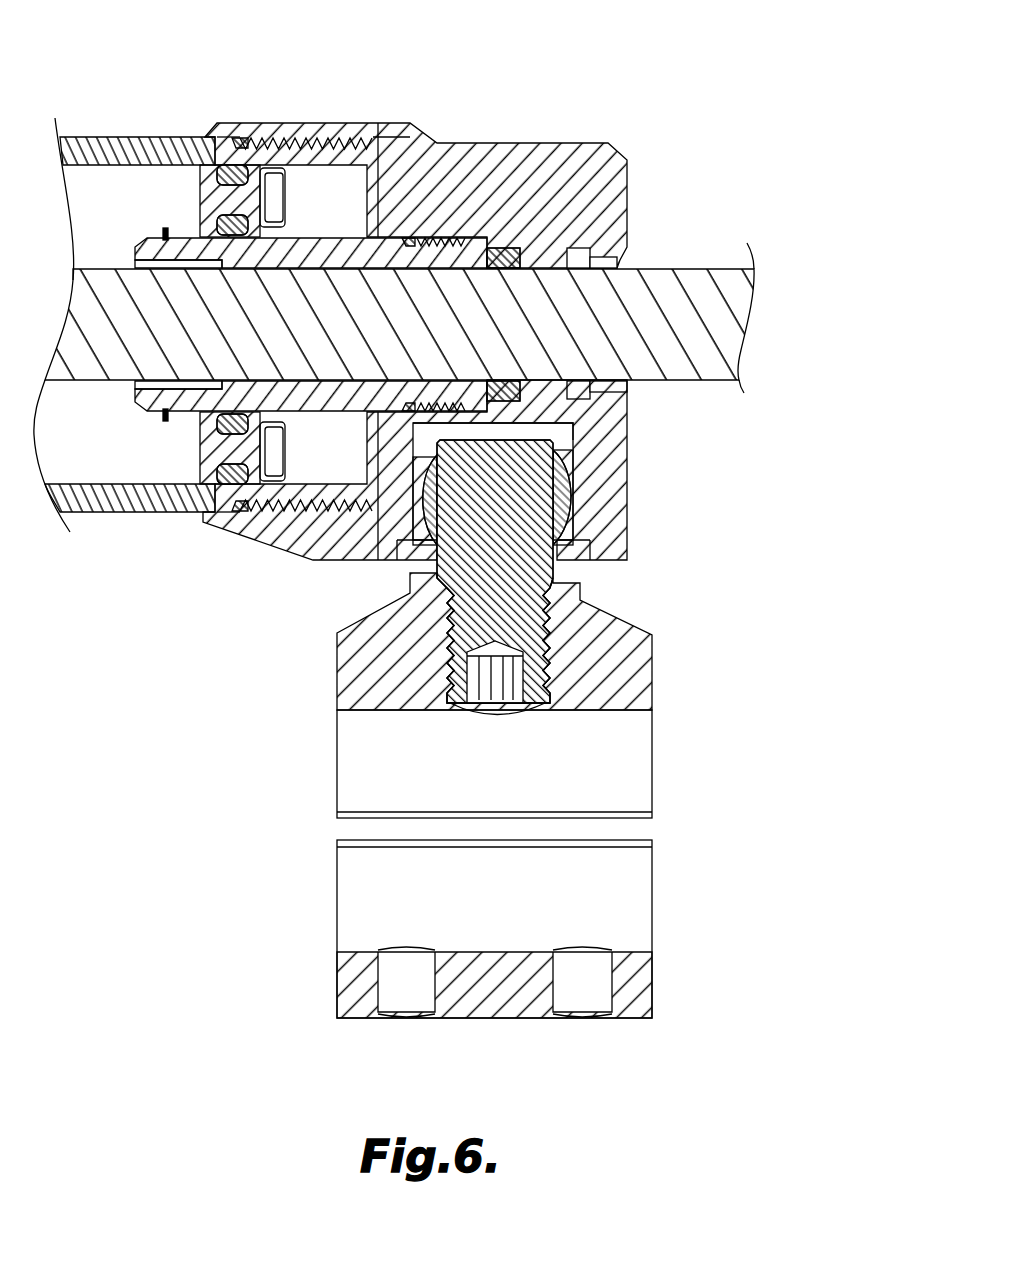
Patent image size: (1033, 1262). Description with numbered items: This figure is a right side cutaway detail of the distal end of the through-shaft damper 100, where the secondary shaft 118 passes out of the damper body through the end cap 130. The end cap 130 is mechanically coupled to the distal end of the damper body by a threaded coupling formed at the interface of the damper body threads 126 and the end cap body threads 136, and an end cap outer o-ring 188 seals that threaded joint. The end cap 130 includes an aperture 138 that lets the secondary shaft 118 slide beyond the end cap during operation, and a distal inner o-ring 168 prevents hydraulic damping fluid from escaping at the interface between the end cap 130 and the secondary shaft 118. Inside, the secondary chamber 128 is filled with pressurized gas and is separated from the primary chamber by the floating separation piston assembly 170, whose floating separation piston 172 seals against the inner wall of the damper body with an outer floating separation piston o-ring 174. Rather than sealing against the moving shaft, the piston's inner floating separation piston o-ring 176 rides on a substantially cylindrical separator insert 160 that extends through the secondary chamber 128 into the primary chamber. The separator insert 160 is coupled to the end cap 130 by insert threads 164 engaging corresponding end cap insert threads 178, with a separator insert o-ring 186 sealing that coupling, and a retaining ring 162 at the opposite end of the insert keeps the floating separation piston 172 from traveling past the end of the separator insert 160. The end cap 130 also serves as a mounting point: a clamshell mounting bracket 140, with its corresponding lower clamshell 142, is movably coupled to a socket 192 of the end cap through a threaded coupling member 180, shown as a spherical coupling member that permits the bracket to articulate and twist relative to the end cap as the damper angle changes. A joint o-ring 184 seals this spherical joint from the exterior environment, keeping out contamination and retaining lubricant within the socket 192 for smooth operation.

The through-shaft damper 100 is at (640, 74).
The secondary shaft 118 is at (695, 268).
The damper body threads 126 is at (337, 187).
The secondary chamber 128 is at (378, 150).
The end cap 130 is at (540, 143).
The end cap body threads 136 is at (282, 137).
The aperture 138 is at (625, 258).
The clamshell mounting bracket 140 is at (650, 664).
The lower clamshell 142 is at (655, 970).
The separator insert 160 is at (146, 237).
The retaining ring 162 is at (165, 228).
The insert threads 164 is at (501, 247).
The distal inner o-ring 168 is at (548, 389).
The floating separation piston assembly 170 is at (232, 507).
The floating separation piston 172 is at (190, 190).
The outer floating separation piston o-ring 174 is at (222, 166).
The inner floating separation piston o-ring 176 is at (194, 457).
The end cap insert threads 178 is at (443, 238).
The threaded coupling member 180 is at (583, 598).
The joint o-ring 184 is at (573, 557).
The separator insert o-ring 186 is at (410, 238).
The end cap outer o-ring 188 is at (241, 146).
The socket 192 is at (568, 443).